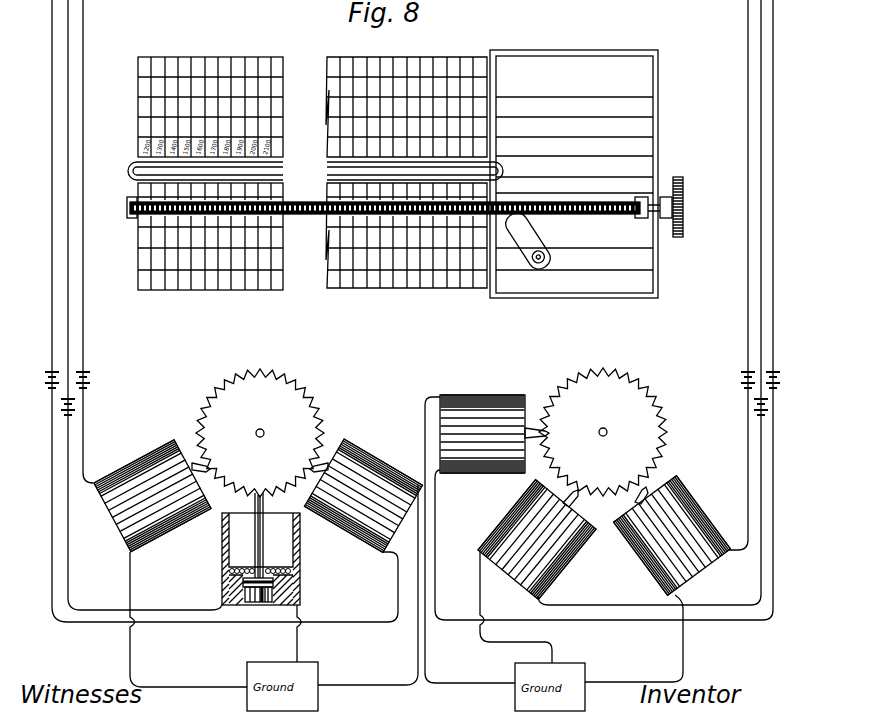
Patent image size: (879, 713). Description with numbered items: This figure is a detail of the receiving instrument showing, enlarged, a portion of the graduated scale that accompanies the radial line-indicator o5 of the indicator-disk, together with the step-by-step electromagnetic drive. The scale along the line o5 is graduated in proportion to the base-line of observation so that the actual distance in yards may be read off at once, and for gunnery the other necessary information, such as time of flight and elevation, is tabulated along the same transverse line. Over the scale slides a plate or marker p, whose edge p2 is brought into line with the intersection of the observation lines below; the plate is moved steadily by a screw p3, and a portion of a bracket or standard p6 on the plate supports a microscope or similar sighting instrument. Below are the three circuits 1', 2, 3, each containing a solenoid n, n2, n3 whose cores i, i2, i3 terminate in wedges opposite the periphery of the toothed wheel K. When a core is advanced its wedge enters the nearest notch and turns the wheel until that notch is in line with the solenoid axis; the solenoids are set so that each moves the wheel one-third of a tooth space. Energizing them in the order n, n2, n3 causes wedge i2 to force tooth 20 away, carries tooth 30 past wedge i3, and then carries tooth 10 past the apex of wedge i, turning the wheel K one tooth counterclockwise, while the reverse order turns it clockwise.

The sliding plate or marker p is at (590, 280).
The edge of indicator-plate p2 is at (488, 260).
The screw p3 is at (336, 213).
The bracket or standard p6 is at (532, 270).
The radial line-indicator o5 is at (323, 175).
The toothed wheel K is at (622, 390).
The solenoid n is at (482, 434).
The solenoid n2 is at (537, 539).
The solenoid n3 is at (671, 535).
The solenoid core i is at (530, 425).
The solenoid core i2 is at (573, 503).
The solenoid core i3 is at (650, 488).
The tooth 10 is at (548, 431).
The tooth 20 is at (583, 482).
The tooth 30 is at (628, 482).
The circuit 1' is at (604, 320).
The circuit 2 is at (605, 598).
The circuit 3 is at (748, 500).